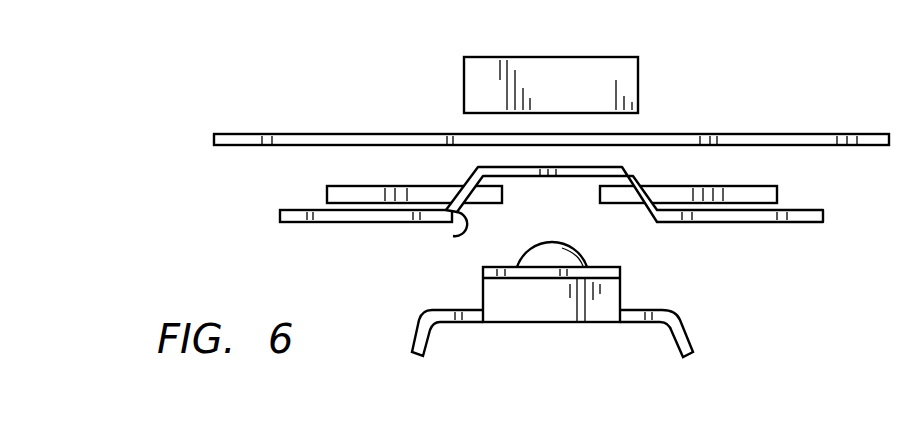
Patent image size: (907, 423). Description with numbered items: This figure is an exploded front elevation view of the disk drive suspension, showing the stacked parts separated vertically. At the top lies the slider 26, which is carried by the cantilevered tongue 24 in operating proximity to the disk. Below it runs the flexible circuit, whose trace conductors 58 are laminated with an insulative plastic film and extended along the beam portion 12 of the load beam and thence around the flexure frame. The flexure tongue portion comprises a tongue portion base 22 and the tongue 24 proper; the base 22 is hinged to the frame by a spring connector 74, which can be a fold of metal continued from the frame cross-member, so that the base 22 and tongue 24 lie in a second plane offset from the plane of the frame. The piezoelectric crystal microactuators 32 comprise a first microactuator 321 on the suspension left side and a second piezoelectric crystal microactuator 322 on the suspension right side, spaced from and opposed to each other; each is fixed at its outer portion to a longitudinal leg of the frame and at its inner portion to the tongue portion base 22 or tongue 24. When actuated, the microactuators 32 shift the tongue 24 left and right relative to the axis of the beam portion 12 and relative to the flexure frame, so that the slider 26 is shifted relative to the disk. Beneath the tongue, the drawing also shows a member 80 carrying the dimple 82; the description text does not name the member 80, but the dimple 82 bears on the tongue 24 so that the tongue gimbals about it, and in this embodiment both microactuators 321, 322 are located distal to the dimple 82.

The beam portion 12 is at (650, 310).
The tongue portion base 22 is at (522, 161).
The tongue 24 is at (500, 166).
The slider 26 is at (583, 57).
The piezoelectric crystal microactuators 32 is at (556, 145).
The first microactuator 321 is at (327, 190).
The second piezoelectric crystal microactuator 322 is at (778, 193).
The trace conductors 58 is at (790, 134).
The spring connector 74 is at (453, 237).
The chip 80 is at (622, 286).
The dimple 82 is at (532, 247).